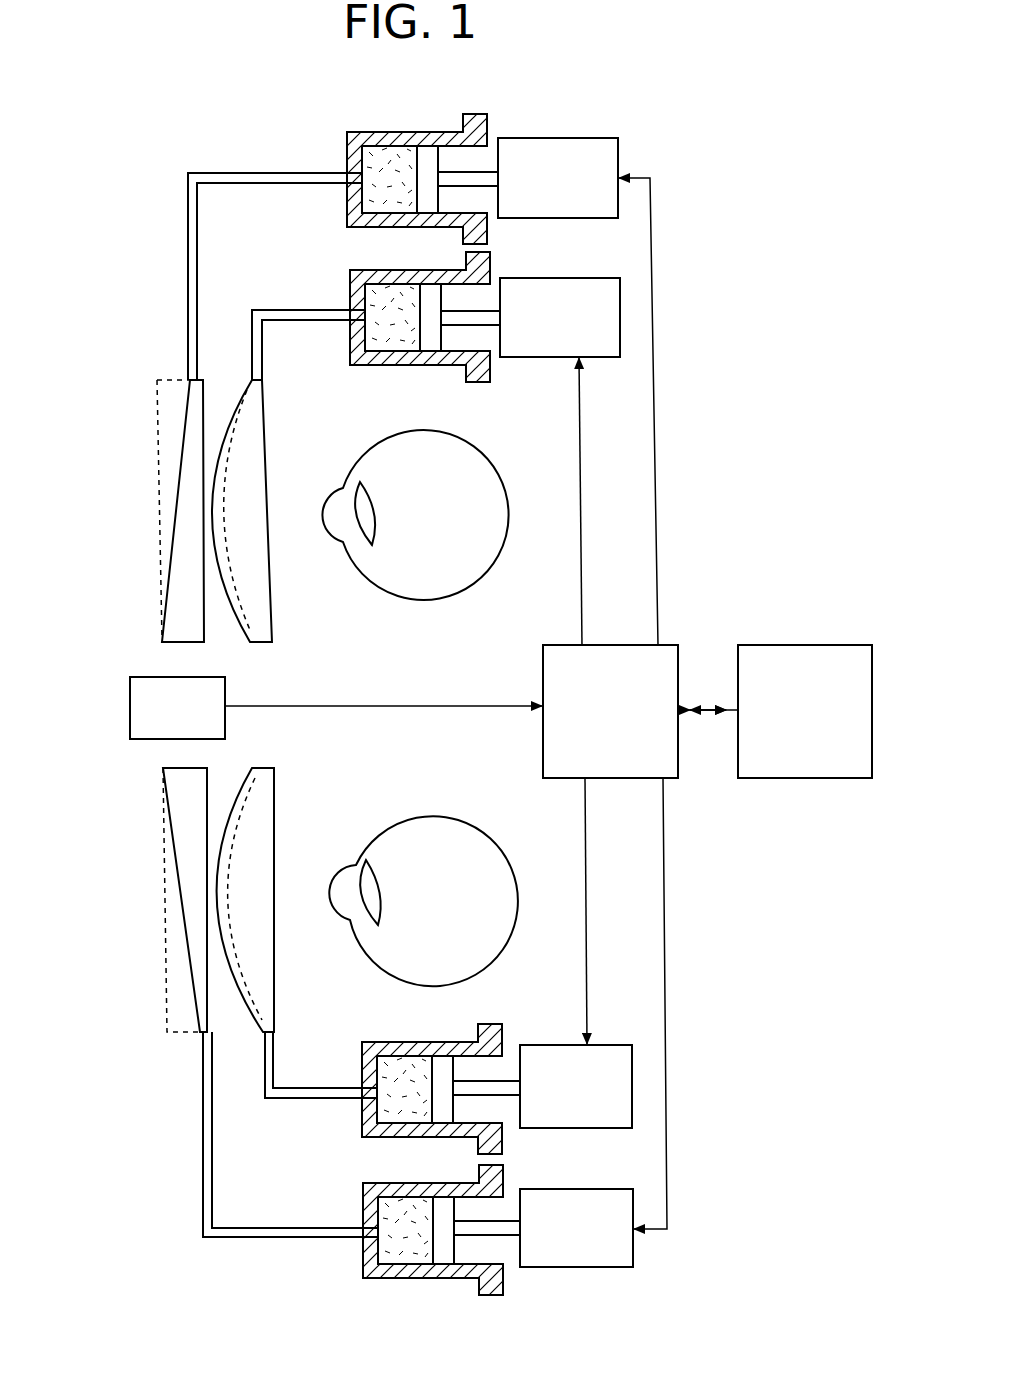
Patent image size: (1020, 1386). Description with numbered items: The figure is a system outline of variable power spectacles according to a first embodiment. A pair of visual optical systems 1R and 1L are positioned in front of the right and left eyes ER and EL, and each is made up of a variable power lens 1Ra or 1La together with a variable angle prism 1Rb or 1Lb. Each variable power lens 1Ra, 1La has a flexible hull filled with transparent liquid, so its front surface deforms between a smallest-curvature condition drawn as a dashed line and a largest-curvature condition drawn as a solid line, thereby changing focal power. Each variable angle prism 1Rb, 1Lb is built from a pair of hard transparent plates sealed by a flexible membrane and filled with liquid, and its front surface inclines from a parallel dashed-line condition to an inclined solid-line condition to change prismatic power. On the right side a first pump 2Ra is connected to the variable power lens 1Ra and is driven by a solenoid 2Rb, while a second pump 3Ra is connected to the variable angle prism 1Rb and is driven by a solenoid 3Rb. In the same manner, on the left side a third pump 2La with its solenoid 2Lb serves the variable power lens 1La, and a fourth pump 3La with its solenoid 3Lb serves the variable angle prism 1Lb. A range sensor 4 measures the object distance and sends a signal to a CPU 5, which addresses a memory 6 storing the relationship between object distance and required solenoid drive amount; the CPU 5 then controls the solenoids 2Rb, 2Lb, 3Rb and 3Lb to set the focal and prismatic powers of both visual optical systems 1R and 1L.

The visual optical system 1R is at (92, 466).
The variable power lens 1Ra is at (235, 475).
The variable angle prism 1Rb is at (185, 500).
The visual optical system 1L is at (98, 862).
The variable power lens 1La is at (240, 870).
The variable angle prism 1Lb is at (187, 897).
The first pump 2Ra is at (350, 283).
The solenoid 2Rb is at (558, 287).
The second pump 3Ra is at (347, 146).
The solenoid 3Rb is at (557, 147).
The third pump 2La is at (366, 1125).
The solenoid 2Lb is at (578, 1122).
The fourth pump 3La is at (366, 1258).
The solenoid 3Lb is at (573, 1260).
The range sensor 4 is at (222, 681).
The CPU 5 is at (542, 667).
The memory 6 is at (791, 770).
The right eye ER is at (458, 568).
The left eye EL is at (456, 830).